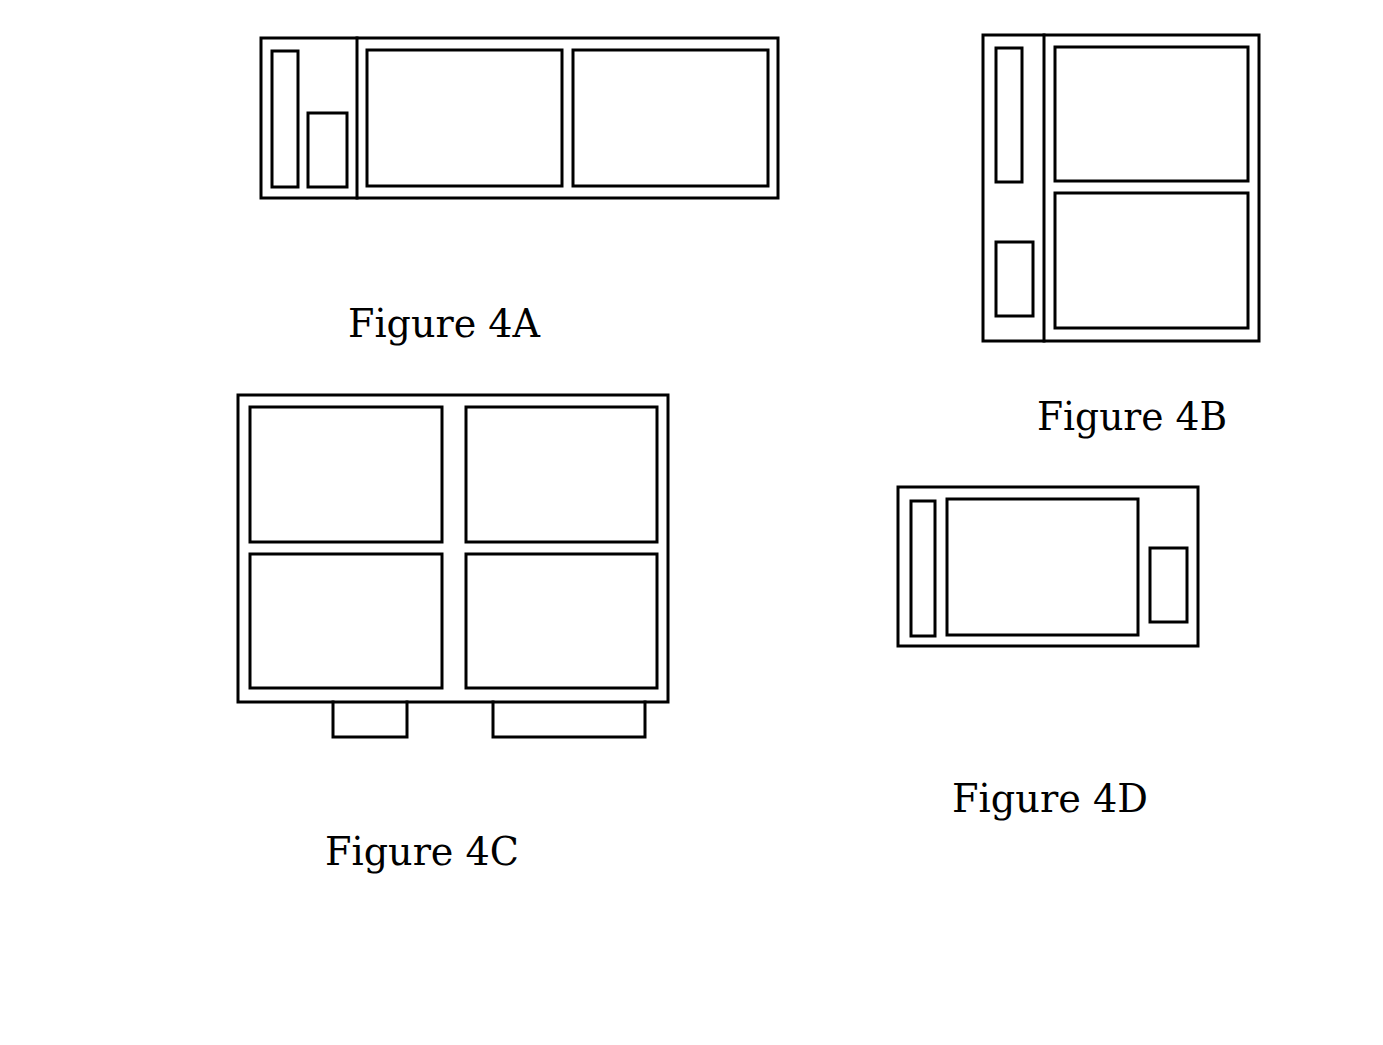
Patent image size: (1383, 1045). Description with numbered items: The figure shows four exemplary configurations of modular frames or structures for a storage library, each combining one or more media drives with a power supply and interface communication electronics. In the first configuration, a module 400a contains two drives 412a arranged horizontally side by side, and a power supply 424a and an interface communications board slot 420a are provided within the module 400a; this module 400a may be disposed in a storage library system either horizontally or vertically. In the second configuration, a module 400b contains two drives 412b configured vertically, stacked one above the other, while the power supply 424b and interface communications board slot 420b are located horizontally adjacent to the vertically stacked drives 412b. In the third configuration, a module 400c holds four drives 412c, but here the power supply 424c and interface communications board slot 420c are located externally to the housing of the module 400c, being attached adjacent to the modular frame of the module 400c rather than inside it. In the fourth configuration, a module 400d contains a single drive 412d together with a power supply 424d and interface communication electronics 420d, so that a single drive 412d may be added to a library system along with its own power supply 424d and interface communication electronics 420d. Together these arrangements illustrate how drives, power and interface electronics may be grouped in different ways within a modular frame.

In FIG. 4A, the module 400a is at (406, 200).
In FIG. 4A, the drives 412a is at (668, 159).
In FIG. 4A, the interface communications board slot 420a is at (281, 174).
In FIG. 4A, the power supply 424a is at (335, 172).
In FIG. 4B, the module 400b is at (1262, 60).
In FIG. 4B, the drives 412b is at (1235, 145).
In FIG. 4B, the interface communications board slot 420b is at (1003, 168).
In FIG. 4B, the power supply 424b is at (1010, 302).
In FIG. 4C, the module 400c is at (468, 703).
In FIG. 4C, the drives 412c is at (643, 515).
In FIG. 4C, the interface communications board slot 420c is at (575, 723).
In FIG. 4C, the power supply 424c is at (360, 723).
In FIG. 4D, the module 400d is at (1175, 647).
In FIG. 4D, the single drive 412d is at (1057, 608).
In FIG. 4D, the interface communication electronics 420d is at (923, 622).
In FIG. 4D, the power supply 424d is at (1163, 596).